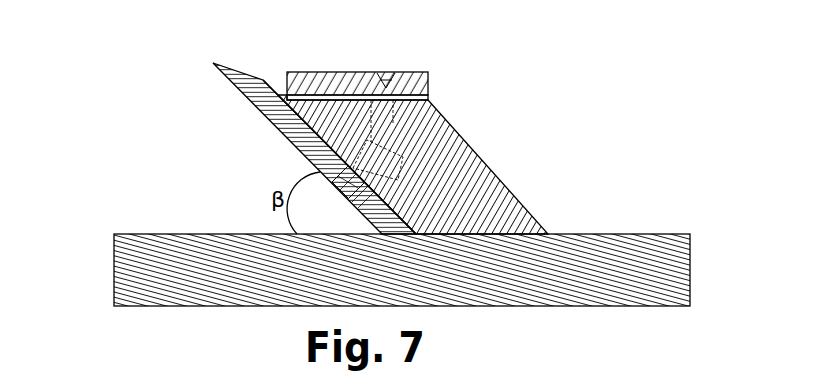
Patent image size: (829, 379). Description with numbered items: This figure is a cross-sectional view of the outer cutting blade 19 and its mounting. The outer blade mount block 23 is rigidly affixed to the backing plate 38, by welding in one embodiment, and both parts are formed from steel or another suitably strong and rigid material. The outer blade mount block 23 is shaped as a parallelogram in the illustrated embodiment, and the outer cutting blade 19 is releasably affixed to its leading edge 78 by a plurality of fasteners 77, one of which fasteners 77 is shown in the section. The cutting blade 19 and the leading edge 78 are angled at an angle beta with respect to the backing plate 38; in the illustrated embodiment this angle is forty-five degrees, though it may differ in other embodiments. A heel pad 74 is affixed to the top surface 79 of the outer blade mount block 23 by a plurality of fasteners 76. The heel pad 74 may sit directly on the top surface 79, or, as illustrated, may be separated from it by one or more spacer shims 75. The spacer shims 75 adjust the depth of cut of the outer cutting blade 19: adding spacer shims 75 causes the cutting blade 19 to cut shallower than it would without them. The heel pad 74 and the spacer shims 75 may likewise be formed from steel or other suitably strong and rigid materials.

The outer cutting blade 19 is at (247, 78).
The outer blade mount block 23 is at (472, 212).
The backing plate 38 is at (573, 242).
The heel pad 74 is at (315, 82).
The spacer shims 75 is at (427, 98).
The fasteners 76 is at (383, 74).
The fasteners 77 is at (350, 210).
The leading edge 78 is at (307, 130).
The top surface 79 is at (403, 100).